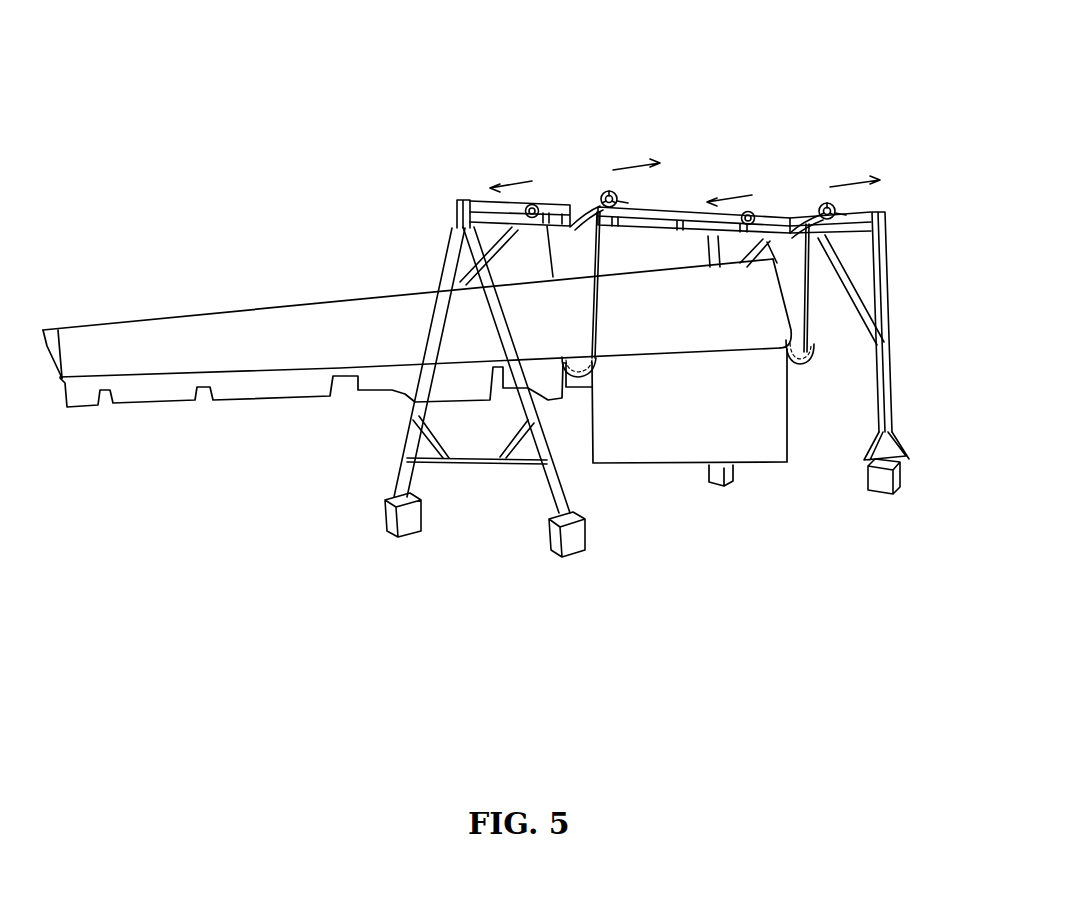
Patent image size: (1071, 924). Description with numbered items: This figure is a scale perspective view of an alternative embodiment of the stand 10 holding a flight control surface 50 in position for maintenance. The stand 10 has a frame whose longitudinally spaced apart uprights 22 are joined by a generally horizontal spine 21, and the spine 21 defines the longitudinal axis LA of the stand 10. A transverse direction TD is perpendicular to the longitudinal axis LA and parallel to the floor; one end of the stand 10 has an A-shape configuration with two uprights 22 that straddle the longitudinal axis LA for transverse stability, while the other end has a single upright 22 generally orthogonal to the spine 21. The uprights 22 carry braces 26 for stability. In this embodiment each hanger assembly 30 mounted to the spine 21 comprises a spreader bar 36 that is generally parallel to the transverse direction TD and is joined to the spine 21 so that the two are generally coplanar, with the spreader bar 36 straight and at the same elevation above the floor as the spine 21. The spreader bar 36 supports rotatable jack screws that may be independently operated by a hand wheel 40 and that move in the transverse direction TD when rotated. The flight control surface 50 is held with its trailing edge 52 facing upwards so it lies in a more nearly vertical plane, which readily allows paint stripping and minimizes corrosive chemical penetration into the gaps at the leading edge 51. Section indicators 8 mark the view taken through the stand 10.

The section line of FIG. 8 is at (957, 228).
The stand 10 is at (543, 606).
The spine 21 is at (447, 234).
The uprights 22 is at (455, 256).
The braces 26 is at (458, 283).
The hanger assembly 30 is at (564, 77).
The spreader bar 36 is at (577, 206).
The hand wheel 40 is at (604, 191).
The flight control surface 50 is at (329, 349).
The leading edge 51 is at (150, 400).
The trailing edge 52 is at (88, 328).
The longitudinal axis LA is at (418, 208).
The transverse direction TD is at (377, 490).